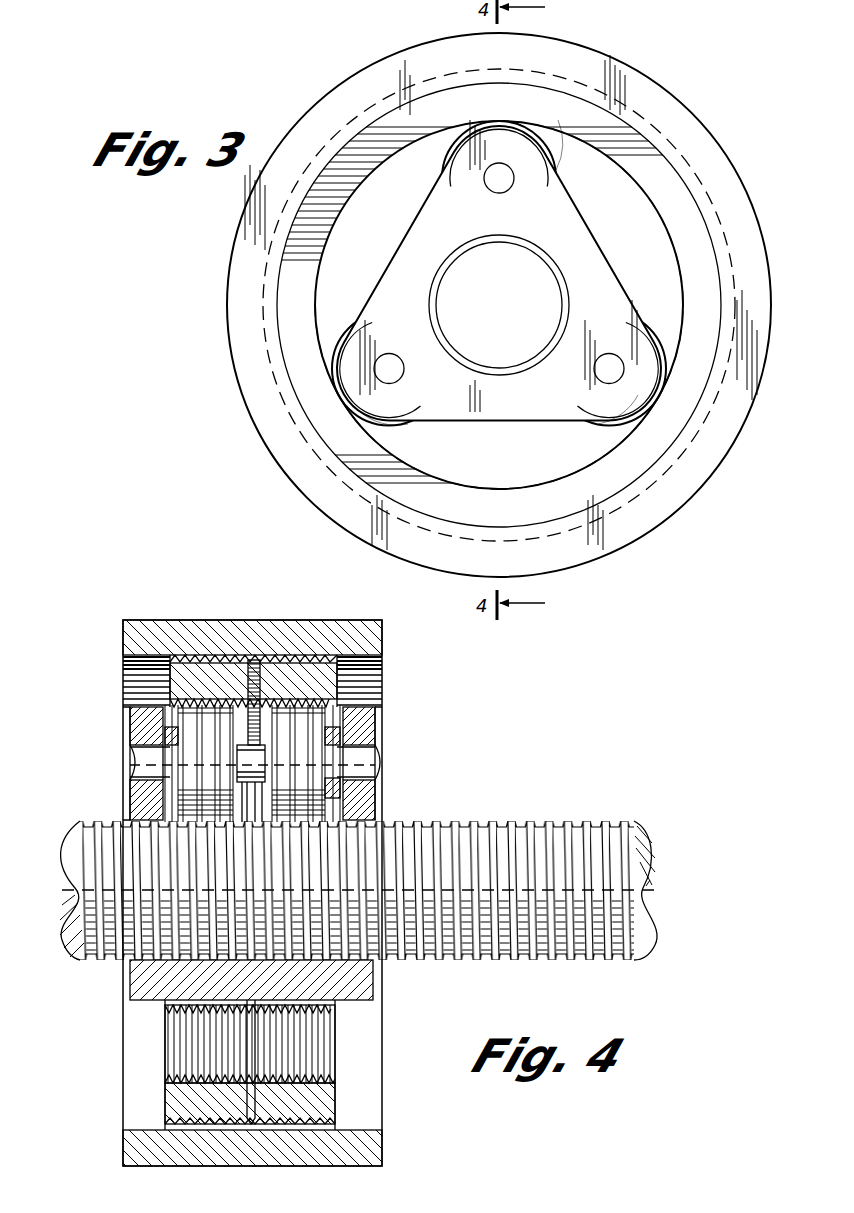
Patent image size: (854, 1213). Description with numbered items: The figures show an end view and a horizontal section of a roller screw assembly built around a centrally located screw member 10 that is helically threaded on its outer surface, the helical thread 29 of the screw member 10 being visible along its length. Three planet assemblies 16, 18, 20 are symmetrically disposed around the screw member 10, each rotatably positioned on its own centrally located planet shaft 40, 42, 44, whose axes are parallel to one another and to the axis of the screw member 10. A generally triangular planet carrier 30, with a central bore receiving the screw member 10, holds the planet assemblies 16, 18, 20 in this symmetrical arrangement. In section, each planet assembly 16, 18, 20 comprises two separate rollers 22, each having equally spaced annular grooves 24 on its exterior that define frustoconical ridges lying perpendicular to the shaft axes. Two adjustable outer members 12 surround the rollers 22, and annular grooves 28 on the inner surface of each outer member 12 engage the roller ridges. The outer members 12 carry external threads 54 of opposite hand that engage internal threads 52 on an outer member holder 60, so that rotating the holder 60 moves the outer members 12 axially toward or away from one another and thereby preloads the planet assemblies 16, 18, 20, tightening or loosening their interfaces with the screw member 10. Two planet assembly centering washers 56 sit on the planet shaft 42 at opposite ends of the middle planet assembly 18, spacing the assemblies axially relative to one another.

In FIG. 3, the screw member 10 is at (546, 290).
In FIG. 4, the screw member 10 is at (640, 846).
In FIG. 4, the adjustable outer member 12 is at (186, 660).
In FIG. 3, the planet assembly 16 is at (410, 452).
In FIG. 4, the planet assembly 16 is at (322, 1026).
In FIG. 3, the planet assembly 18 is at (578, 158).
In FIG. 4, the planet assembly 18 is at (348, 700).
In FIG. 3, the planet assembly 20 is at (588, 438).
In FIG. 3, the roller 22 is at (546, 116).
In FIG. 4, the roller 22 is at (181, 711).
In FIG. 4, the annular groove 24 is at (166, 792).
In FIG. 3, the annular groove 28 is at (672, 215).
In FIG. 4, the annular groove 28 is at (332, 700).
In FIG. 4, the screw thread 29 is at (581, 822).
In FIG. 3, the planet carrier 30 is at (412, 268).
In FIG. 4, the planet carrier 30 is at (357, 727).
In FIG. 3, the planet shaft 40 is at (596, 387).
In FIG. 3, the planet shaft 42 is at (492, 181).
In FIG. 4, the planet shaft 42 is at (372, 760).
In FIG. 3, the planet shaft 44 is at (384, 355).
In FIG. 3, the internal threads 52 is at (323, 158).
In FIG. 4, the internal threads 52 is at (251, 664).
In FIG. 4, the threads 54 is at (162, 673).
In FIG. 4, the planet assembly centering washer 56 is at (160, 732).
In FIG. 3, the outer member holder 60 is at (386, 82).
In FIG. 4, the outer member holder 60 is at (150, 632).